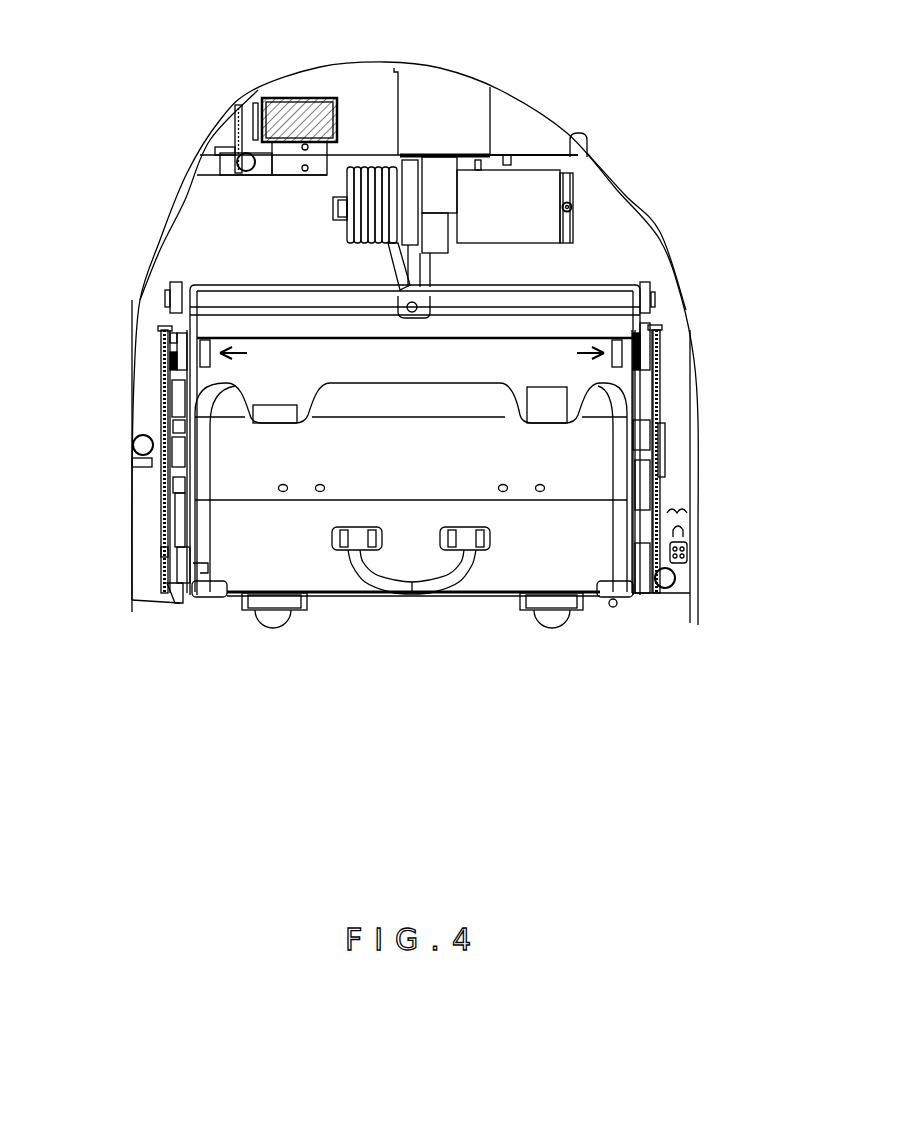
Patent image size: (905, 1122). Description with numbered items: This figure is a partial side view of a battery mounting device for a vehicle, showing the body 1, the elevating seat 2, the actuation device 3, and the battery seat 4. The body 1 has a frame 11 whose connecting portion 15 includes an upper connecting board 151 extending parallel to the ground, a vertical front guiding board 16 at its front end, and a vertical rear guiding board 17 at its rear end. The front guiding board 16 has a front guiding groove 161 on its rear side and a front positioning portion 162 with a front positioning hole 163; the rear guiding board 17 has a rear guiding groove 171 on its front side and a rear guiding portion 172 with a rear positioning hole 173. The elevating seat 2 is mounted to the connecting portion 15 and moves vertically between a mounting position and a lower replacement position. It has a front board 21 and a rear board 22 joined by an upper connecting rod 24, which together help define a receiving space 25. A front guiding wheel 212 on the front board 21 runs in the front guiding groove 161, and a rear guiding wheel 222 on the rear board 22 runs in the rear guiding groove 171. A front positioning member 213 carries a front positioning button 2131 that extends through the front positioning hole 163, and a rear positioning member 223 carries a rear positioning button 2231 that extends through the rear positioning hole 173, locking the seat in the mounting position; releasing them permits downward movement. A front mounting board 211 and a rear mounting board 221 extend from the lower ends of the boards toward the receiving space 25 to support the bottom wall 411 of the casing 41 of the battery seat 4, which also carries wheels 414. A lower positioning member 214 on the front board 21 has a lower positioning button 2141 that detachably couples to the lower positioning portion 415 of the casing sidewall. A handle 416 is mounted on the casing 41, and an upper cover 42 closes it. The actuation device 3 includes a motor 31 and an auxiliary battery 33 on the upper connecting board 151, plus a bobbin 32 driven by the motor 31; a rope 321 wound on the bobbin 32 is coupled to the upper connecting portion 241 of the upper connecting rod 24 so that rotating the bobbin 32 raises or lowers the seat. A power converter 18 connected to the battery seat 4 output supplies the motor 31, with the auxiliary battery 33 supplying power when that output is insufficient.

The body 1 is at (353, 108).
The elevating seat 2 is at (650, 262).
The actuation device 3 is at (591, 205).
The battery seat 4 is at (366, 597).
The frame 11 is at (527, 160).
The connecting portion 15 is at (497, 105).
The upper connecting board 151 is at (499, 153).
The front guiding board 16 is at (152, 498).
The front guiding groove 161 is at (165, 506).
The front positioning portion 162 is at (152, 333).
The front positioning hole 163 is at (165, 350).
The rear guiding board 17 is at (673, 478).
The rear guiding groove 171 is at (660, 490).
The rear guiding portion 172 is at (672, 332).
The rear positioning hole 173 is at (660, 350).
The power converter 18 is at (305, 101).
The front board 21 is at (185, 458).
The front mounting board 211 is at (200, 592).
The front guiding wheel 212 is at (176, 398).
The front positioning member 213 is at (203, 336).
The front positioning button 2131 is at (165, 356).
The lower positioning member 214 is at (160, 567).
The lower positioning button 2141 is at (205, 572).
The rear board 22 is at (635, 452).
The rear mounting board 221 is at (609, 604).
The rear guiding wheel 222 is at (647, 440).
The rear positioning member 223 is at (614, 336).
The rear positioning button 2231 is at (657, 357).
The upper connecting rod 24 is at (262, 273).
The upper connecting portion 241 is at (402, 318).
The receiving space 25 is at (535, 362).
The motor 31 is at (525, 193).
The bobbin 32 is at (366, 211).
The rope 321 is at (398, 260).
The auxiliary battery 33 is at (444, 113).
The casing 41 is at (498, 569).
The bottom wall 411 is at (331, 595).
The wheels 414 is at (552, 618).
The lower positioning portion 415 is at (187, 583).
The handle 416 is at (410, 570).
The upper cover 42 is at (460, 398).